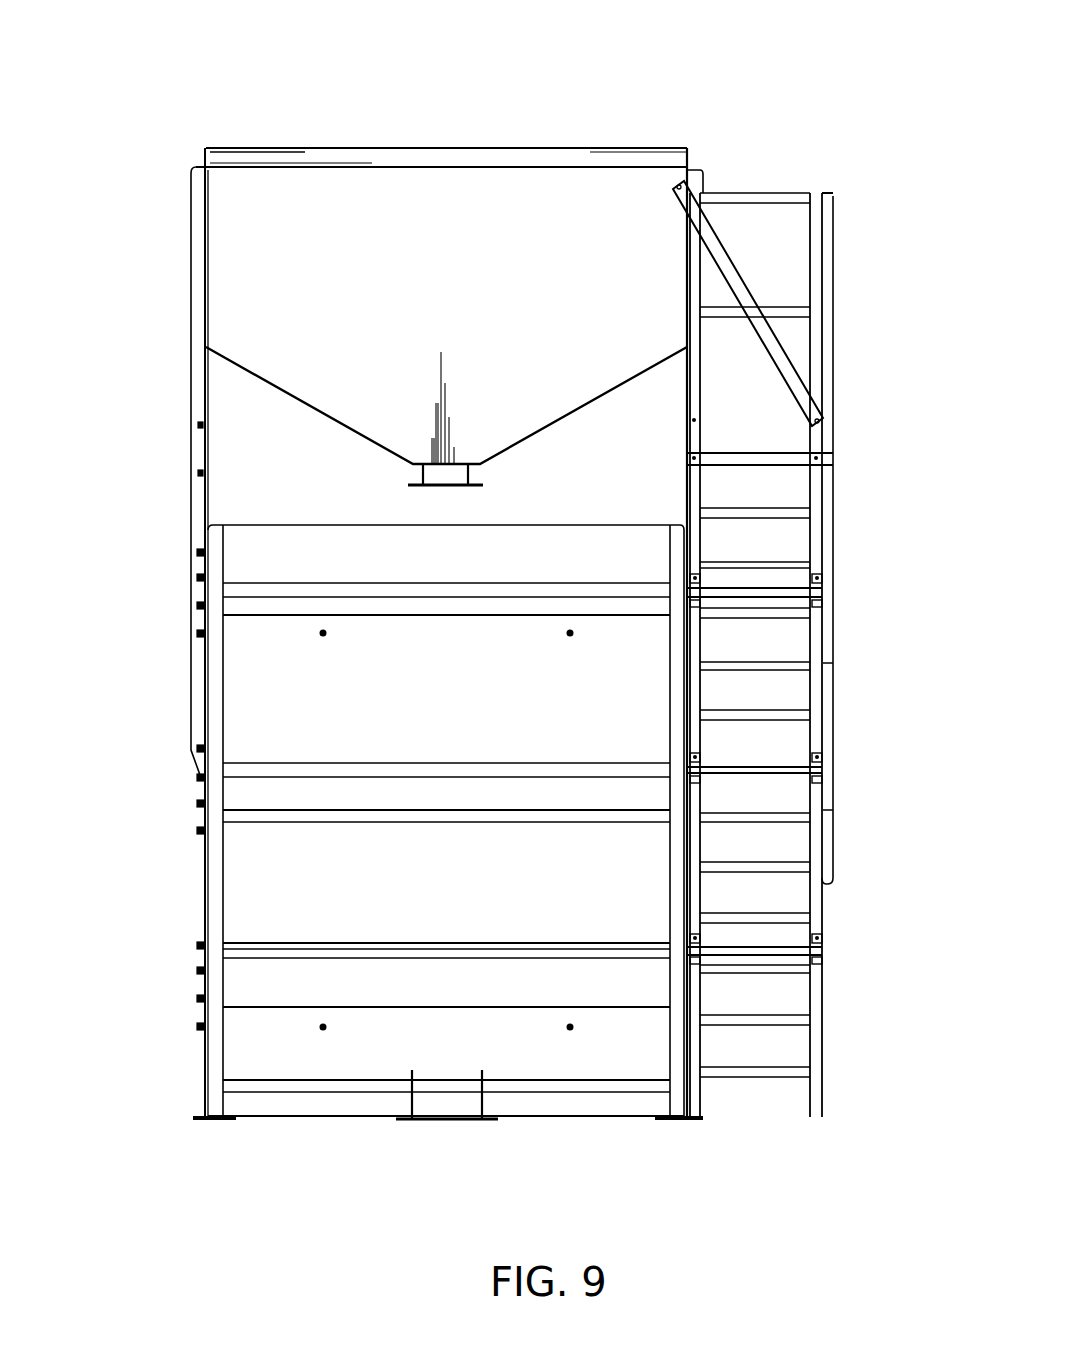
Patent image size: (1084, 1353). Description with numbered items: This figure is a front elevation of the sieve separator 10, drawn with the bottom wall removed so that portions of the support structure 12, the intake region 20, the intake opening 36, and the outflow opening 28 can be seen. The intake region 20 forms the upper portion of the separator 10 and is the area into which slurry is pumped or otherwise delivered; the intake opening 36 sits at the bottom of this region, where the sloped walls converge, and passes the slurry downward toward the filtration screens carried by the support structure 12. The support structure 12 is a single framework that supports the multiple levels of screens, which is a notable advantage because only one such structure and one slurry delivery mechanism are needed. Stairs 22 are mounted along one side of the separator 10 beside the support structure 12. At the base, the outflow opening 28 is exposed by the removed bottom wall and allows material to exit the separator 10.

The separator 10 is at (683, 104).
The support structure 12 is at (200, 880).
The intake region 20 is at (463, 190).
The stairs 22 is at (845, 565).
The outflow opening 28 is at (449, 1126).
The intake opening 36 is at (462, 494).